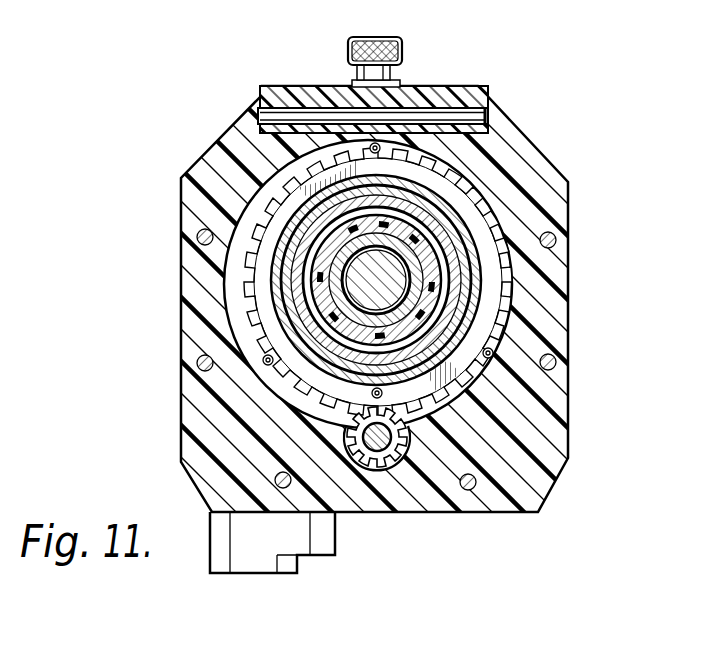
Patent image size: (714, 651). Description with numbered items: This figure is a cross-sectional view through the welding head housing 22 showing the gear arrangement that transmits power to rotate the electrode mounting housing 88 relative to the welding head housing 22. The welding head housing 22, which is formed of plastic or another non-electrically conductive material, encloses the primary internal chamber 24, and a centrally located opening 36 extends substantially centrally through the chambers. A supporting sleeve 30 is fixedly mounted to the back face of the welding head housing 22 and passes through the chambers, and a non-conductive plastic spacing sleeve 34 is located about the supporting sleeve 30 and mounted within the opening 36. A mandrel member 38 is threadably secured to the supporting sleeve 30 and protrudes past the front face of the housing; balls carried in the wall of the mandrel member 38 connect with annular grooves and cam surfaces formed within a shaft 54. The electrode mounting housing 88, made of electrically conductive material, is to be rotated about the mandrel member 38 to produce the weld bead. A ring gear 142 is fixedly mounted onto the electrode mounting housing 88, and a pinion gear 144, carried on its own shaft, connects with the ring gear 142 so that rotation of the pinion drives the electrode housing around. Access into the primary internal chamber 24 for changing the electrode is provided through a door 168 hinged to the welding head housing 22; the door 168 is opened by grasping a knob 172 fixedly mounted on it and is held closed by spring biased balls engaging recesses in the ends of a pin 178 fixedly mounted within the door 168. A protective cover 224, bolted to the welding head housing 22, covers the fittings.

The welding head housing 22 is at (557, 440).
The primary internal chamber 24 is at (520, 303).
The supporting sleeve 30 is at (435, 290).
The spacing sleeve 34 is at (320, 272).
The centrally located opening 36 is at (437, 264).
The mandrel member 38 is at (345, 292).
The shaft 54 is at (262, 212).
The electrode mounting housing 88 is at (463, 318).
The ring gear 142 is at (455, 198).
The pinion gear 144 is at (386, 462).
The door 168 is at (344, 90).
The knob 172 is at (364, 36).
The pin 178 is at (468, 112).
The protective cover 224 is at (298, 563).